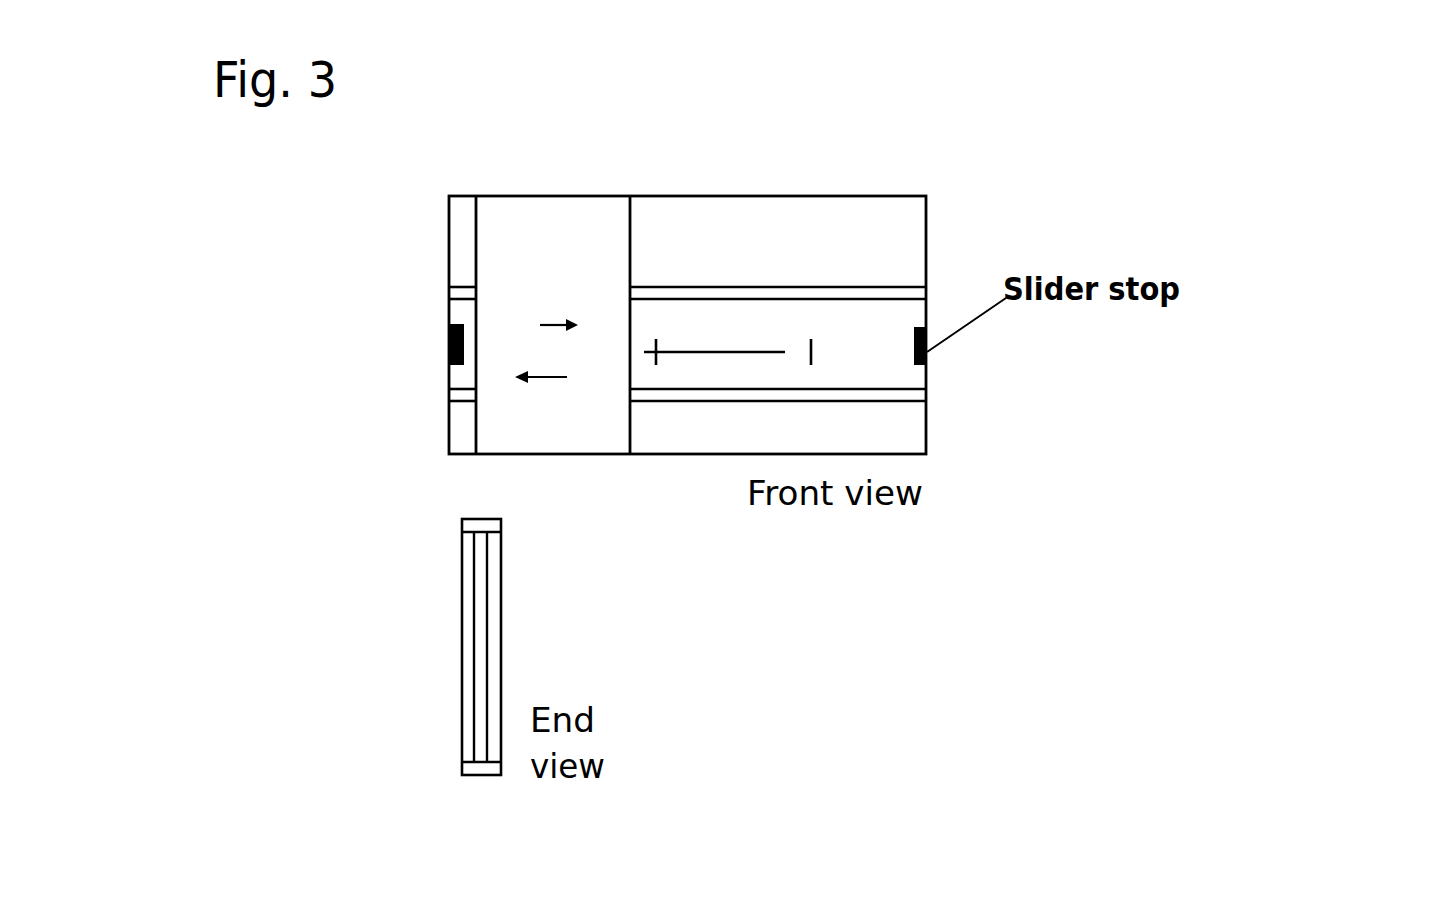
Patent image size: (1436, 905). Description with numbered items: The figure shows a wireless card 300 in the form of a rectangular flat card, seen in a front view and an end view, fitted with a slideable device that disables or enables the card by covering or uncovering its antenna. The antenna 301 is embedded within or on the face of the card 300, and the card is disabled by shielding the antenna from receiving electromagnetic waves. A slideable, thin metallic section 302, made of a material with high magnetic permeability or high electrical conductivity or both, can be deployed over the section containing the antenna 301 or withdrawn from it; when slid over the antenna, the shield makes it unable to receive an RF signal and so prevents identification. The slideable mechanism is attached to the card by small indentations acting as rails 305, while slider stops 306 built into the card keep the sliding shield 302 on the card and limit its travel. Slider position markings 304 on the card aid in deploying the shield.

The card 300 is at (938, 430).
The antenna 301 is at (720, 352).
The slideable thin metallic section 302 is at (592, 455).
The slider position markings 304 is at (823, 341).
The rails 305 is at (825, 286).
The slider stops 306 is at (450, 351).